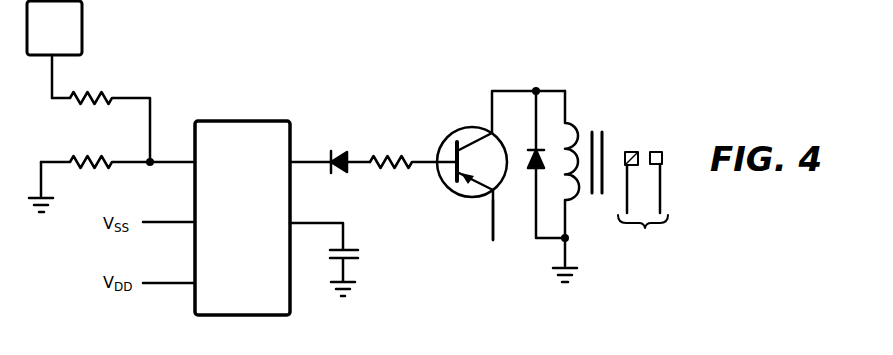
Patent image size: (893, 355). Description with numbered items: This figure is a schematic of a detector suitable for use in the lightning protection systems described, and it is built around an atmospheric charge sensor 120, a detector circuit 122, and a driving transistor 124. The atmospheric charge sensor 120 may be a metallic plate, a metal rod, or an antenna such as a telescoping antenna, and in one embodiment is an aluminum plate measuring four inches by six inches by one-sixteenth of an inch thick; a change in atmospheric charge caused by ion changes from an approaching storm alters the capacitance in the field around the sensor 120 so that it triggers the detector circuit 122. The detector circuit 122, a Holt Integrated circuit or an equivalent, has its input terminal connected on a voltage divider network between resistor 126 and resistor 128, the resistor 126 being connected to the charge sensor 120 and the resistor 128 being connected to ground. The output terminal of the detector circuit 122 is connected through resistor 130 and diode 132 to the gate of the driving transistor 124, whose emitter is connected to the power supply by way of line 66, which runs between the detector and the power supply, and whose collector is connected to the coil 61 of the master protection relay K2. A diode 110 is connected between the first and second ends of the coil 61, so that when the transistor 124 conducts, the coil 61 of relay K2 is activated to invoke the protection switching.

The atmospheric charge sensor 120 is at (69, 38).
The resistor 126 is at (100, 92).
The resistor 128 is at (88, 152).
The detector circuit 122 is at (228, 176).
The diode 132 is at (340, 150).
The resistor 130 is at (392, 153).
The driving transistor 124 is at (459, 130).
The line 66 is at (493, 222).
The diode 110 is at (530, 152).
The coil 61 is at (566, 122).
The master protection relay K2 is at (604, 152).